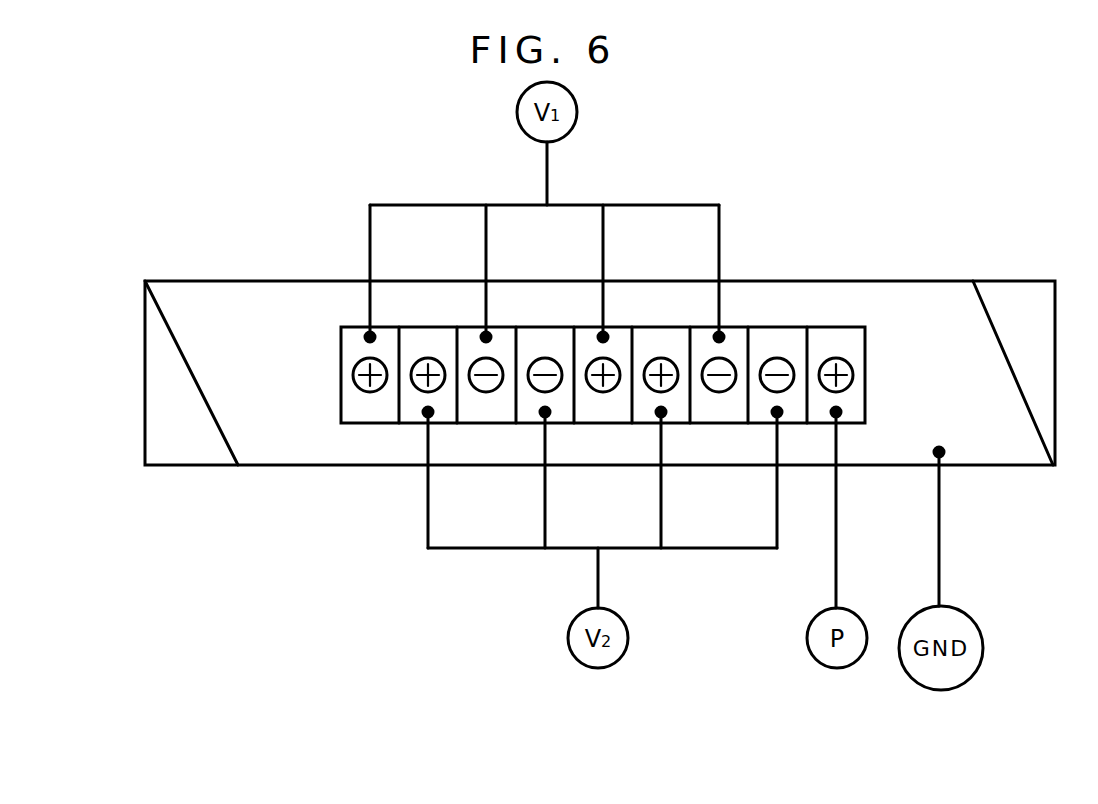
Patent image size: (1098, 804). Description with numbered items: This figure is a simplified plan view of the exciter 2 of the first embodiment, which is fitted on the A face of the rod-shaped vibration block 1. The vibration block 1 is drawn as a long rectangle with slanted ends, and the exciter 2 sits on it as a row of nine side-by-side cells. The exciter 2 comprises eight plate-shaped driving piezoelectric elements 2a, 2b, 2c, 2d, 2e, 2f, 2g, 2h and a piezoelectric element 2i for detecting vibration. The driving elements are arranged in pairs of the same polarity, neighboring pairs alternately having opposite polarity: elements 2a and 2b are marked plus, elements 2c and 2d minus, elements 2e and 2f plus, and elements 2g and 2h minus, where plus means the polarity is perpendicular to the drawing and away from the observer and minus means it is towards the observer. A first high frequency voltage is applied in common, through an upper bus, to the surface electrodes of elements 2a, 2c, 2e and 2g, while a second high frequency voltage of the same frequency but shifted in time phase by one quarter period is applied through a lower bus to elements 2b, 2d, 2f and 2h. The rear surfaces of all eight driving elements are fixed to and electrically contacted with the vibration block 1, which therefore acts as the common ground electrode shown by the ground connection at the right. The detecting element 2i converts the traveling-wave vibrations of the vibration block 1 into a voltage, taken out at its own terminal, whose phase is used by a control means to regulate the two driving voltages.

The vibration block 1 is at (305, 300).
The exciter 2 is at (838, 337).
The driving piezoelectric element 2a is at (368, 418).
The driving piezoelectric element 2b is at (418, 413).
The driving piezoelectric element 2c is at (483, 413).
The driving piezoelectric element 2d is at (533, 413).
The driving piezoelectric element 2e is at (600, 413).
The driving piezoelectric element 2f is at (648, 413).
The driving piezoelectric element 2g is at (712, 413).
The driving piezoelectric element 2h is at (767, 413).
The piezoelectric element for detecting vibration 2i is at (817, 413).